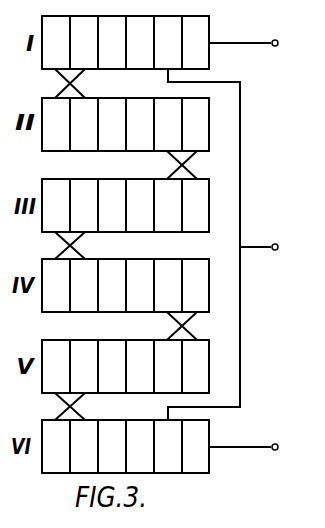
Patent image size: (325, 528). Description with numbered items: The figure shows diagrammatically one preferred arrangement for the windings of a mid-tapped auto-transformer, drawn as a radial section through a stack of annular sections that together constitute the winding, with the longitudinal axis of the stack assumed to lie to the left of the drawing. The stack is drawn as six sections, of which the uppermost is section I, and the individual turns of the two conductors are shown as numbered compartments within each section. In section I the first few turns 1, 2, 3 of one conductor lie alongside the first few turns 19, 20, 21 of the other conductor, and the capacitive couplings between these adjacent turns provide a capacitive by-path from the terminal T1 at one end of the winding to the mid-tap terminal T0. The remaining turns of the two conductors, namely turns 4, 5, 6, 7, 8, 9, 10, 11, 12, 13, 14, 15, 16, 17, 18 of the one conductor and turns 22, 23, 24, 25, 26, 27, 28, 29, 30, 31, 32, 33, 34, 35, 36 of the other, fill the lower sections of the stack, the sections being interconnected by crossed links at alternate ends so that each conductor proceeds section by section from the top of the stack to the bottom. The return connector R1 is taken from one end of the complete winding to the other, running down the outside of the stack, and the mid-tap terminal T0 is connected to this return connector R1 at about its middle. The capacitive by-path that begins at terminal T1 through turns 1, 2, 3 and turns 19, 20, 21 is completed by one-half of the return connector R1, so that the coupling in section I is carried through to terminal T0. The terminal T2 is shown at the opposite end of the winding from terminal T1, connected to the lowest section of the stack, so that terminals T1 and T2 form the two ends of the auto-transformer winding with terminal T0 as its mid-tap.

The turn 1 is at (195, 42).
The turn 2 is at (140, 42).
The turn 3 is at (84, 42).
The contact segment 4 is at (56, 124).
The contact segment 5 is at (112, 124).
The contact segment 6 is at (168, 124).
The contact segment 7 is at (195, 205).
The contact segment 8 is at (140, 205).
The contact segment 9 is at (84, 205).
The contact segment 10 is at (56, 285).
The contact segment 11 is at (112, 285).
The contact segment 12 is at (168, 285).
The contact segment 13 is at (195, 366).
The contact segment 14 is at (140, 366).
The contact segment 15 is at (84, 366).
The contact segment 16 is at (56, 446).
The contact segment 17 is at (112, 446).
The contact segment 18 is at (168, 446).
The turn 19 is at (168, 42).
The turn 20 is at (112, 42).
The turn 21 is at (56, 42).
The contact segment 22 is at (84, 124).
The contact segment 23 is at (140, 124).
The contact segment 24 is at (195, 124).
The contact segment 25 is at (168, 205).
The contact segment 26 is at (112, 205).
The contact segment 27 is at (56, 205).
The contact segment 28 is at (84, 285).
The contact segment 29 is at (140, 285).
The contact segment 30 is at (195, 285).
The contact segment 31 is at (168, 366).
The contact segment 32 is at (112, 366).
The contact segment 33 is at (56, 366).
The contact segment 34 is at (84, 446).
The contact segment 35 is at (140, 446).
The contact segment 36 is at (195, 446).
The return connector R1 is at (224, 244).
The terminal T1 is at (254, 46).
The mid-tap terminal T0 is at (270, 250).
The terminal T2 is at (254, 450).